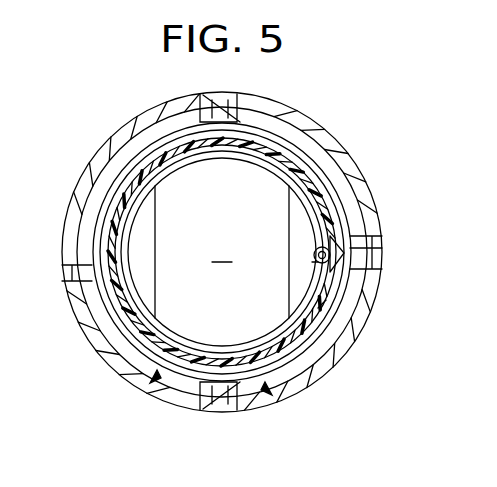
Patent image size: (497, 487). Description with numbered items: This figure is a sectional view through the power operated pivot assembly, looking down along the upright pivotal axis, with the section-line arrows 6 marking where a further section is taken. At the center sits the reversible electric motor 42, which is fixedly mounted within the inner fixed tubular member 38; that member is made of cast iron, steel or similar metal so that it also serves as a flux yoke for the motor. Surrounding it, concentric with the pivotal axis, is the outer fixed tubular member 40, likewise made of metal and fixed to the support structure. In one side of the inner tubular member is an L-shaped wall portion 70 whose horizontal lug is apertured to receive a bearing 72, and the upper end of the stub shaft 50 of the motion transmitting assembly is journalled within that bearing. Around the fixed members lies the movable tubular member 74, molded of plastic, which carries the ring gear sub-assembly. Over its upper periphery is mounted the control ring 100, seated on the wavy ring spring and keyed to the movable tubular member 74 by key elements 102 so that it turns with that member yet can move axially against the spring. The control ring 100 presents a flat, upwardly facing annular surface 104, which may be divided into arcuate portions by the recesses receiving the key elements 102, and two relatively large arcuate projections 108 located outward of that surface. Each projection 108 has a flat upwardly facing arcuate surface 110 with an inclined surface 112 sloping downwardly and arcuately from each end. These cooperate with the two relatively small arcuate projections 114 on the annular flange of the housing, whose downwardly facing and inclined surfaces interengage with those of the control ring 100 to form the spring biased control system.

The section line arrows 6 is at (155, 377).
The inner fixed tubular member 38 is at (152, 352).
The outer fixed tubular member 40 is at (98, 133).
The reversible electric motor 42 is at (222, 252).
The stub shaft 50 is at (328, 250).
The L-shaped wall portion 70 is at (306, 180).
The bearing 72 is at (334, 262).
The movable tubular member 74 is at (322, 306).
The control ring 100 is at (292, 134).
The key elements 102 is at (180, 137).
The annular surface 104 is at (293, 148).
The arcuate projections 108 is at (136, 119).
The arcuate surface 110 is at (98, 184).
The inclined surface 112 is at (366, 242).
The arcuate projections 114 is at (238, 100).